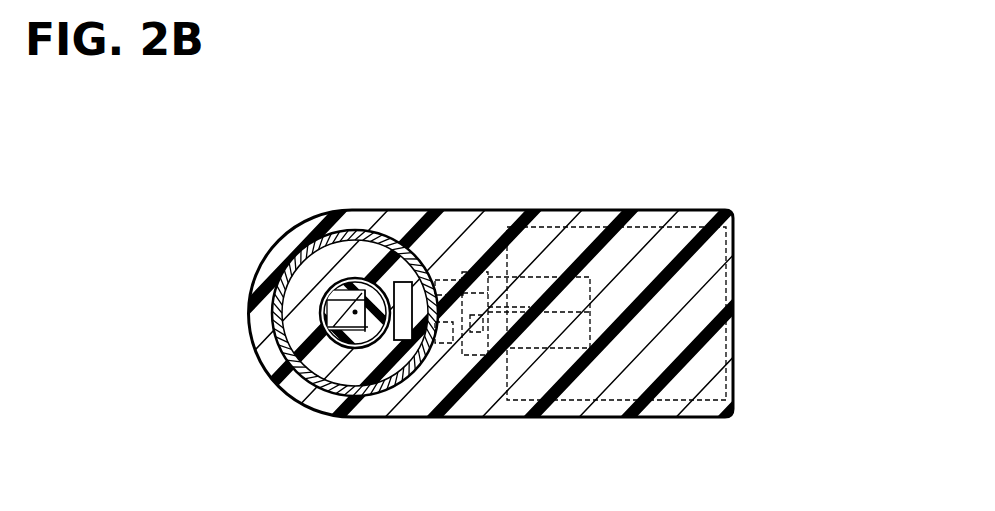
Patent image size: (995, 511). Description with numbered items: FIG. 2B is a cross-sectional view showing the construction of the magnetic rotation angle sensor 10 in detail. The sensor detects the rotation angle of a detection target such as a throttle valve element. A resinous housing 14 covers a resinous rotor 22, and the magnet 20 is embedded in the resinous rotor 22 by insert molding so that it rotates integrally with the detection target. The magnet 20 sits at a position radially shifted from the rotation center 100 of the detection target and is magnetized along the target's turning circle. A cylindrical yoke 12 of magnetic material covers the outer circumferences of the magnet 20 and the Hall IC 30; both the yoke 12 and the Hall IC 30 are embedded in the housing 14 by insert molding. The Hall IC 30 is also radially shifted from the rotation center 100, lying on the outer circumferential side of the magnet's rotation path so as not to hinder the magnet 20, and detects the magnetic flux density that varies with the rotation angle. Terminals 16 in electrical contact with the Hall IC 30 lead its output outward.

The magnetic rotation angle sensor 10 is at (293, 212).
The yoke 12 is at (292, 276).
The resinous housing 14 is at (497, 222).
The terminals 16 is at (560, 273).
The magnet 20 is at (323, 315).
The resinous rotor 22 is at (345, 283).
The Hall IC 30 is at (400, 300).
The rotation center 100 is at (355, 318).